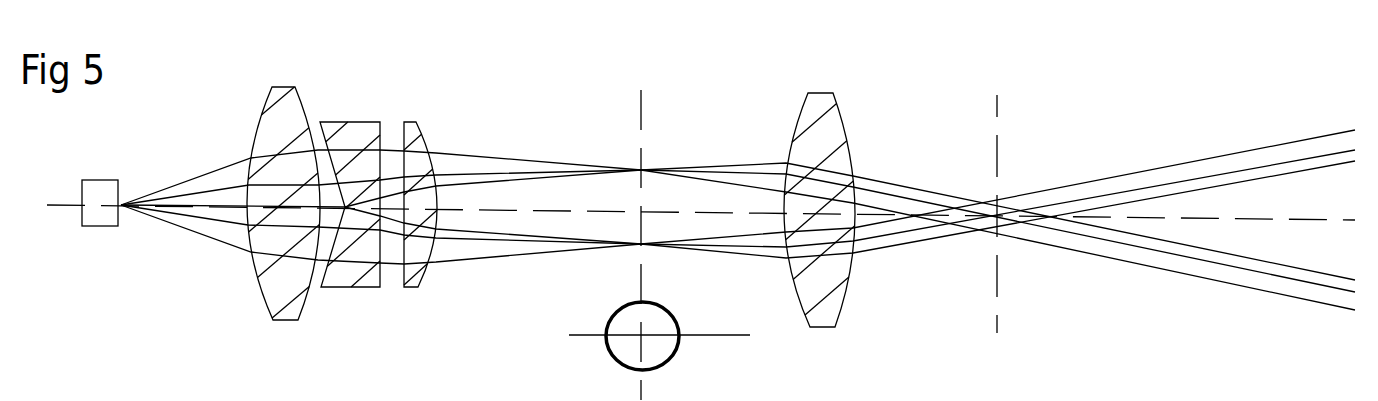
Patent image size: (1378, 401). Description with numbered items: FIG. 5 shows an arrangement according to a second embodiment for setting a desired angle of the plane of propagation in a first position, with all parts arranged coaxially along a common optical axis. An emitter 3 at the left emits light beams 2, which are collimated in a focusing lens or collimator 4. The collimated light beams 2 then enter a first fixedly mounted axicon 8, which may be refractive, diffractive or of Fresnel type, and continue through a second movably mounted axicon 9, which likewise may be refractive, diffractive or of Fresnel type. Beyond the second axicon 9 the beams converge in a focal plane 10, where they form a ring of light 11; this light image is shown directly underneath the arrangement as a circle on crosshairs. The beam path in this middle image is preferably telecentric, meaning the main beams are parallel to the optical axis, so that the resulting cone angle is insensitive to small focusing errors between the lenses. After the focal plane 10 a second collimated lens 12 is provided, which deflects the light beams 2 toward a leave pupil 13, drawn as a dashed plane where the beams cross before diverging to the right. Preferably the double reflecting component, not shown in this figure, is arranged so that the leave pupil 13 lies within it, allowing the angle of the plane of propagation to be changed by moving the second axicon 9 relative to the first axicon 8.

The light beams 2 is at (532, 157).
The emitter 3 is at (95, 180).
The focusing lens or collimator 4 is at (275, 86).
The first fixedly mounted axicon 8 is at (362, 122).
The second movably mounted axicon 9 is at (410, 122).
The focal plane 10 is at (641, 90).
The ring of light 11 is at (607, 332).
The second collimated lens 12 is at (818, 92).
The leave pupil 13 is at (997, 95).